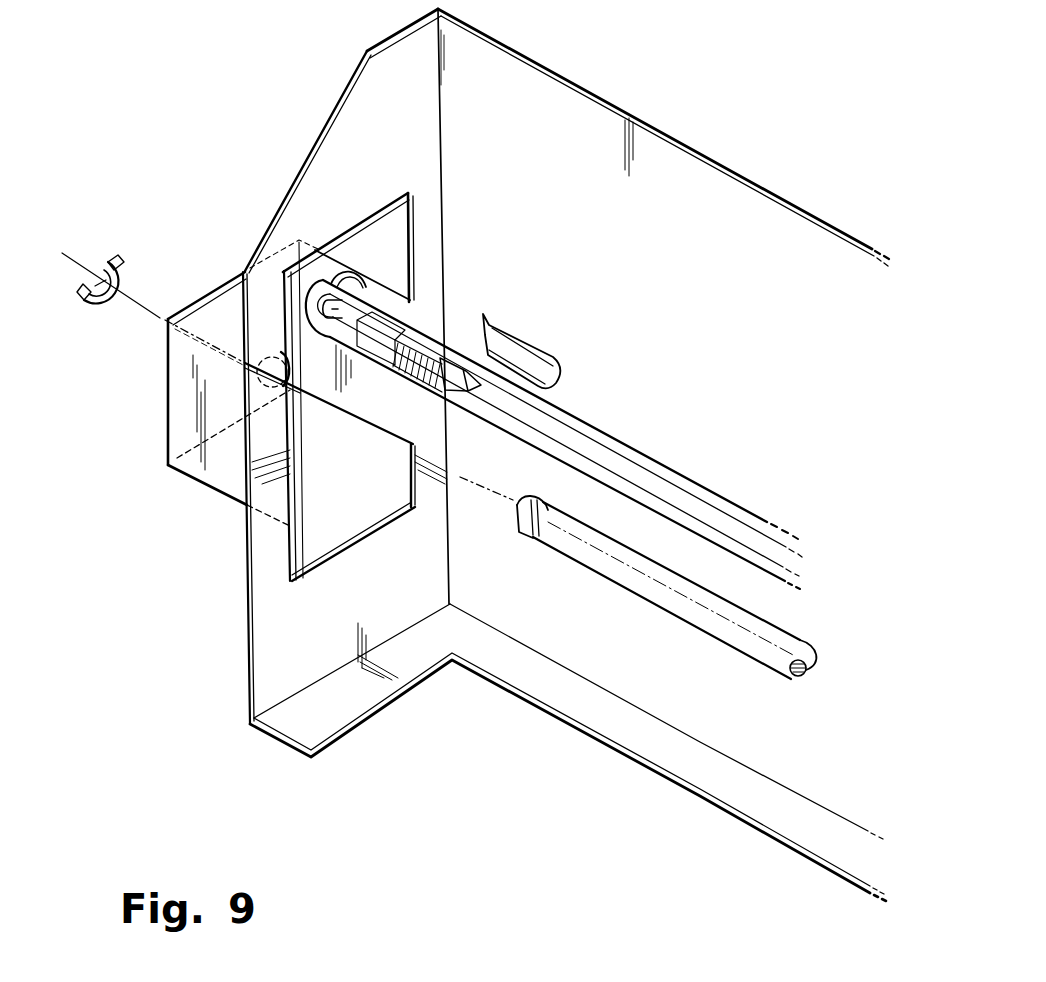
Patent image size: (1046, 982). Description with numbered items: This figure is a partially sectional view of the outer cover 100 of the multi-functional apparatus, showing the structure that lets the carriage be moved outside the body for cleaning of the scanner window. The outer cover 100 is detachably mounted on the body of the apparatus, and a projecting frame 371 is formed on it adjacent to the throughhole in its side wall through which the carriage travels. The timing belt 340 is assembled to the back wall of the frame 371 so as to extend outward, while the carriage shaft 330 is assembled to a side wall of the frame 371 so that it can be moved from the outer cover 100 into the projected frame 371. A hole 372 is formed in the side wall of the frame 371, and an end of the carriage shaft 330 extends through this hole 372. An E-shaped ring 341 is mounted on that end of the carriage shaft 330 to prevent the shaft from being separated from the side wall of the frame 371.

The outer cover 100 is at (716, 150).
The carriage shaft 330 is at (778, 631).
The timing belt 340 is at (699, 481).
The E-shaped ring 341 is at (110, 250).
The frame 371 is at (217, 289).
The hole 372 is at (284, 260).